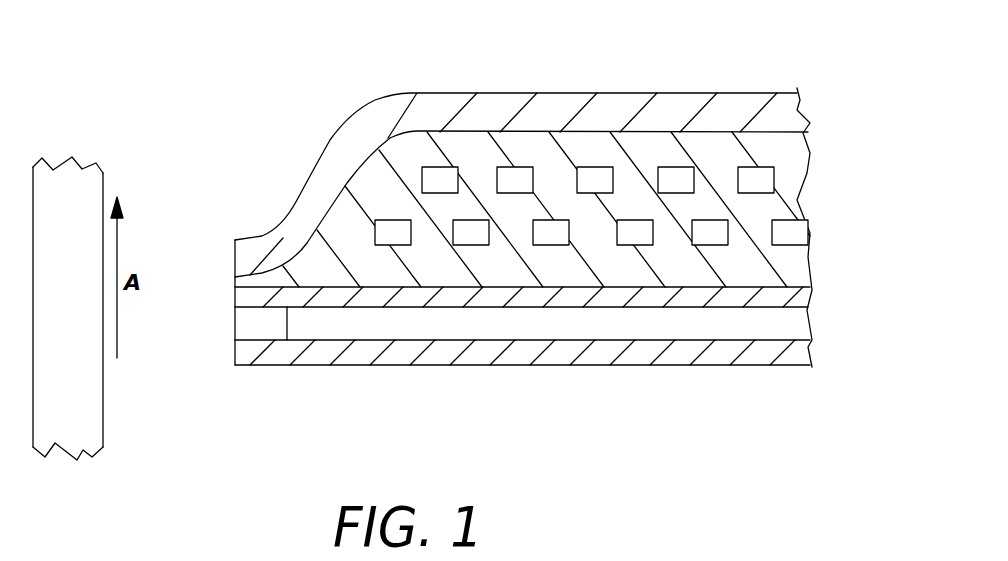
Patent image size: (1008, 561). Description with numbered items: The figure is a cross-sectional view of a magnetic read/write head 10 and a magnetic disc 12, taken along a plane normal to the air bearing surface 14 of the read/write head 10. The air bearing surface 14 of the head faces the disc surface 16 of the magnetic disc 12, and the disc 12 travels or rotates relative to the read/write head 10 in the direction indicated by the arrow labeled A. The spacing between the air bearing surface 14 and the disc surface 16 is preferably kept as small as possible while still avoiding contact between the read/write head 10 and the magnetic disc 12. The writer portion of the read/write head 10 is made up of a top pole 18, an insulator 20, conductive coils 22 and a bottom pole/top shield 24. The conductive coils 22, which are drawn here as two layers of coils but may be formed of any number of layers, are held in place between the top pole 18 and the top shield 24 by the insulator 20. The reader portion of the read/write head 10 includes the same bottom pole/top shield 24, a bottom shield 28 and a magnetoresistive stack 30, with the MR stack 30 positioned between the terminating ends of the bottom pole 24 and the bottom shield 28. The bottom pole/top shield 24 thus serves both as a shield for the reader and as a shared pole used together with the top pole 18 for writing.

The magnetic read/write head 10 is at (713, 63).
The magnetic disc 12 is at (84, 337).
The air bearing surface 14 is at (225, 348).
The disc surface 16 is at (102, 397).
The top pole 18 is at (797, 92).
The insulator 20 is at (782, 143).
The conductive coils 22 is at (728, 222).
The bottom pole/top shield 24 is at (802, 298).
The bottom shield 28 is at (802, 353).
The magnetoresistive (MR) stack 30 is at (250, 323).